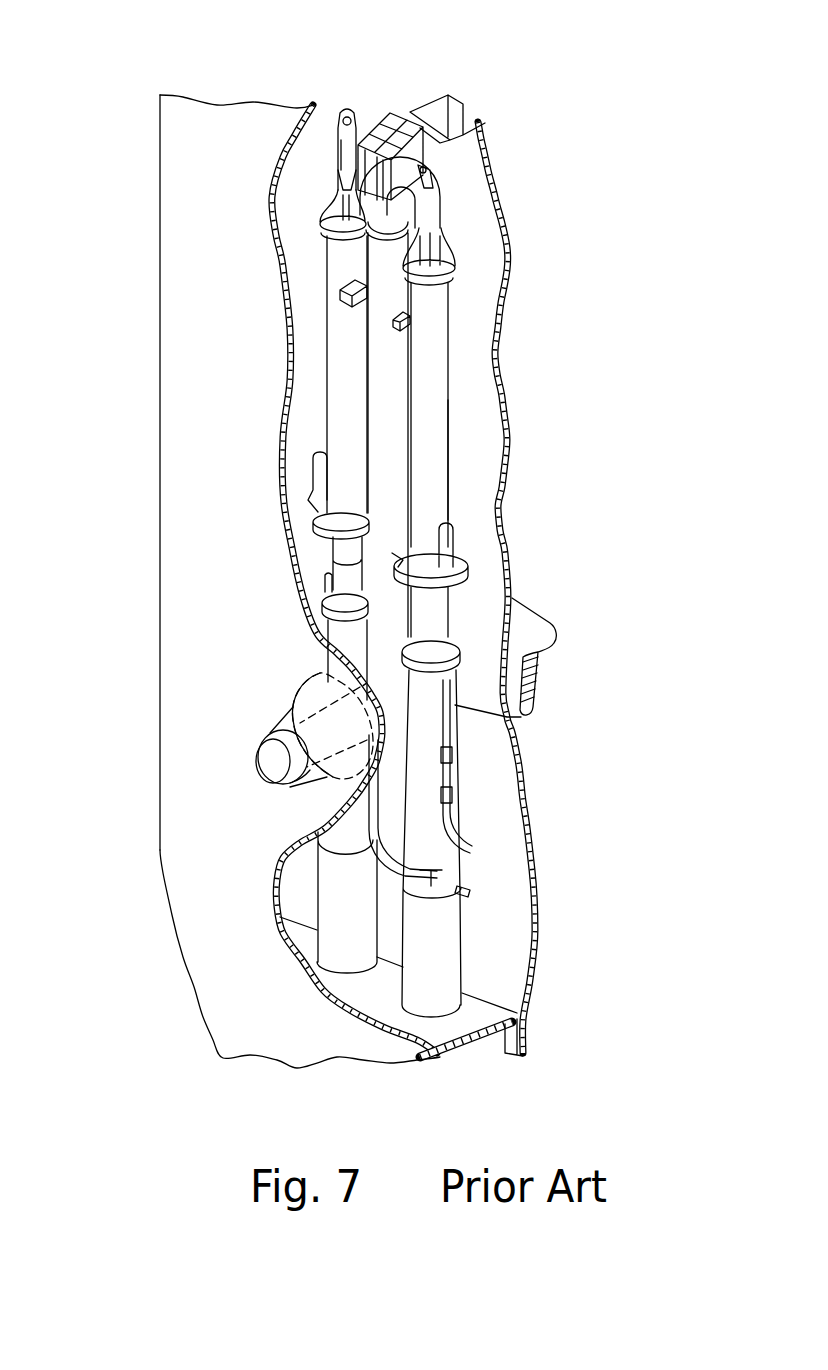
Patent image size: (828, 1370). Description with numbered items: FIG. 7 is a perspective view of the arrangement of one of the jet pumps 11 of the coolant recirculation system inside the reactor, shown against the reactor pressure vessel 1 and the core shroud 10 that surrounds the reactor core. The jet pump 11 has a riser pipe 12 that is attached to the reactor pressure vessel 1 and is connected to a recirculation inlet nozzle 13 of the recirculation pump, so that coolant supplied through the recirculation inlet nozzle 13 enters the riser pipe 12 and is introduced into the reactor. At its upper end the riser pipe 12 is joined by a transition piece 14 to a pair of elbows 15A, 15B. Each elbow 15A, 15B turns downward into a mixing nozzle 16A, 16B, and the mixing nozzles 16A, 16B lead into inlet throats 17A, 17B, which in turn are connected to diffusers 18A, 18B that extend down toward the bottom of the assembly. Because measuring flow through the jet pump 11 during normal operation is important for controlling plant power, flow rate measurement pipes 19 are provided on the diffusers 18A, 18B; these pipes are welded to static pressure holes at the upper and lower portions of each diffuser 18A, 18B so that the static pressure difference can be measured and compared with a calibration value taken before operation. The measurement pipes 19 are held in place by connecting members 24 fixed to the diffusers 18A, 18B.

The reactor pressure vessel 1 is at (157, 323).
The core shroud 10 is at (510, 532).
The jet pump 11 is at (451, 454).
The riser pipe 12 is at (378, 452).
The recirculation inlet nozzle 13 is at (290, 720).
The transition piece 14 is at (325, 182).
The elbow 15A is at (336, 133).
The elbow 15B is at (438, 165).
The mixing nozzle 16A is at (340, 223).
The mixing nozzle 16B is at (452, 268).
The inlet throat 17A is at (340, 413).
The inlet throat 17B is at (430, 418).
The diffuser 18A is at (305, 832).
The diffuser 18B is at (453, 780).
The flow rate measurement pipe 19 is at (470, 895).
The connecting member 24 is at (453, 750).